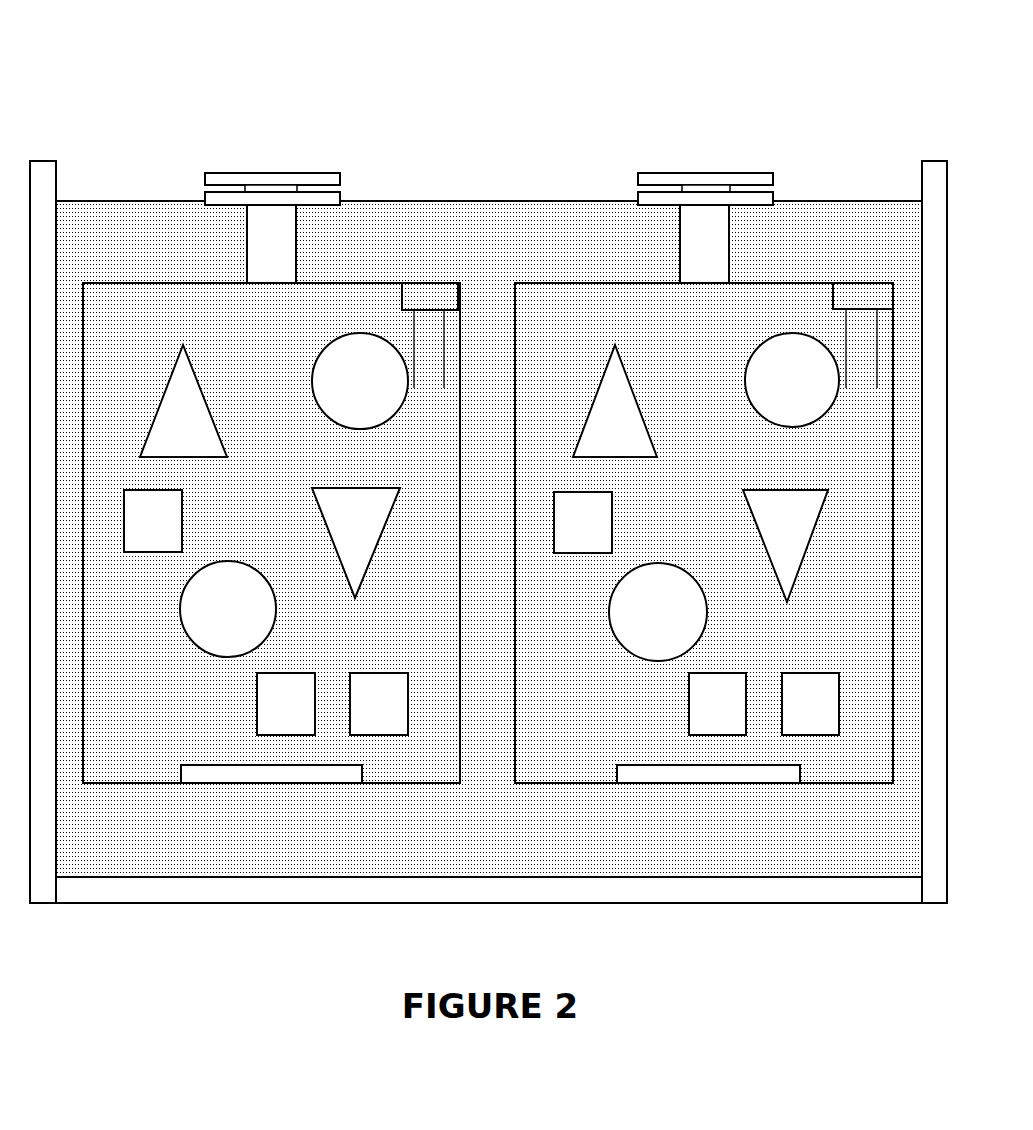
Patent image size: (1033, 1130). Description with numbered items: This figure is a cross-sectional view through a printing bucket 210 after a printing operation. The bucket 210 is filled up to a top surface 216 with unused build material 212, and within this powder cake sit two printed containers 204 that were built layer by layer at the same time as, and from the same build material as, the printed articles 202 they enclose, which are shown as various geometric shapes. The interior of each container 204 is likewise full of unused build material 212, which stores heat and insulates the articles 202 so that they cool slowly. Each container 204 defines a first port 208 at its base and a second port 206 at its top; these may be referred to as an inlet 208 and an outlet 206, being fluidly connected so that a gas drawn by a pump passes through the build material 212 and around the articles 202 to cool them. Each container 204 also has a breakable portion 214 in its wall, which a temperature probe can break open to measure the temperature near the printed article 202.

The printed article 202 is at (183, 345).
The printed container 204 is at (205, 283).
The second port 206 is at (270, 173).
The first port 208 is at (273, 784).
The printing bucket 210 is at (865, 904).
The unused build material 212 is at (455, 445).
The breakable portion 214 is at (430, 283).
The top surface 216 is at (488, 200).